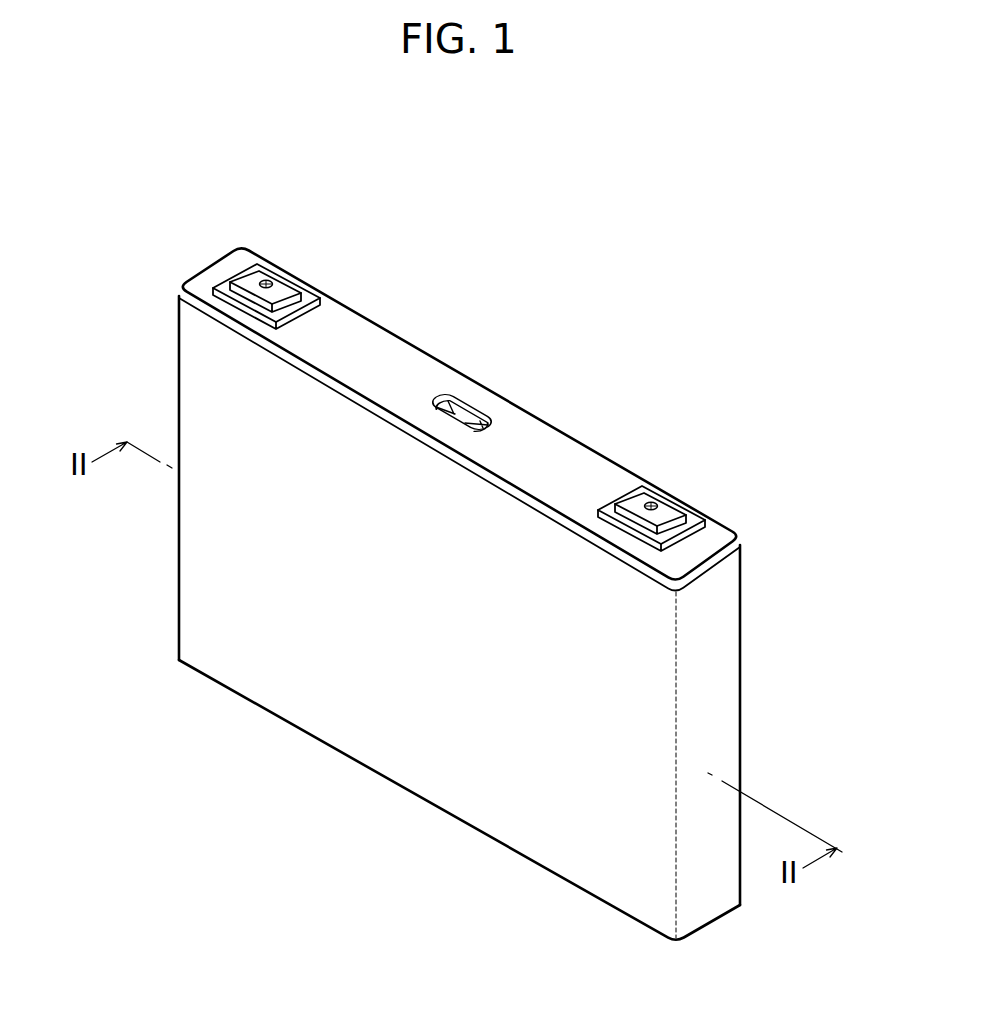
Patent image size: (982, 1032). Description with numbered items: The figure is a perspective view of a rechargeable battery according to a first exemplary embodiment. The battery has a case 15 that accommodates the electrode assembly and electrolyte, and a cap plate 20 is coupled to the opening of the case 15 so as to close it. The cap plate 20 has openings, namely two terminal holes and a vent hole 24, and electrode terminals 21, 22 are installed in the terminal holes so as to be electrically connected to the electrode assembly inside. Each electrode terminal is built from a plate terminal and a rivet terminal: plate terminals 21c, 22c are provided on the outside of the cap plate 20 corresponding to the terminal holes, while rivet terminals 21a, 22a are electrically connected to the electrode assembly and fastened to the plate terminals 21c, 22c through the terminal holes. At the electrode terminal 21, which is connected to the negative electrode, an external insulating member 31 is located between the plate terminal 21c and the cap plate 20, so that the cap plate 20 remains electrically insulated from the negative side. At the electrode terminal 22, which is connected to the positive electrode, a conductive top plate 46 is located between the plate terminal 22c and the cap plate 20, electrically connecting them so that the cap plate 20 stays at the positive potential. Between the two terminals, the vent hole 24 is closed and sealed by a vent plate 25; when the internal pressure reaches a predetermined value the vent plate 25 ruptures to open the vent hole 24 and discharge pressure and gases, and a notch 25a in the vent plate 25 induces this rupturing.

The case 15 is at (397, 747).
The cap plate 20 is at (368, 343).
The electrode terminal 21 is at (258, 249).
The rivet terminal 21a is at (267, 283).
The plate terminal 21c is at (287, 287).
The external insulating member 31 is at (222, 286).
The electrode terminal 22 is at (700, 466).
The rivet terminal 22a is at (653, 502).
The plate terminal 22c is at (670, 510).
The conductive top plate 46 is at (693, 515).
The vent hole 24 is at (443, 393).
The vent plate 25 is at (463, 410).
The notch 25a is at (468, 425).